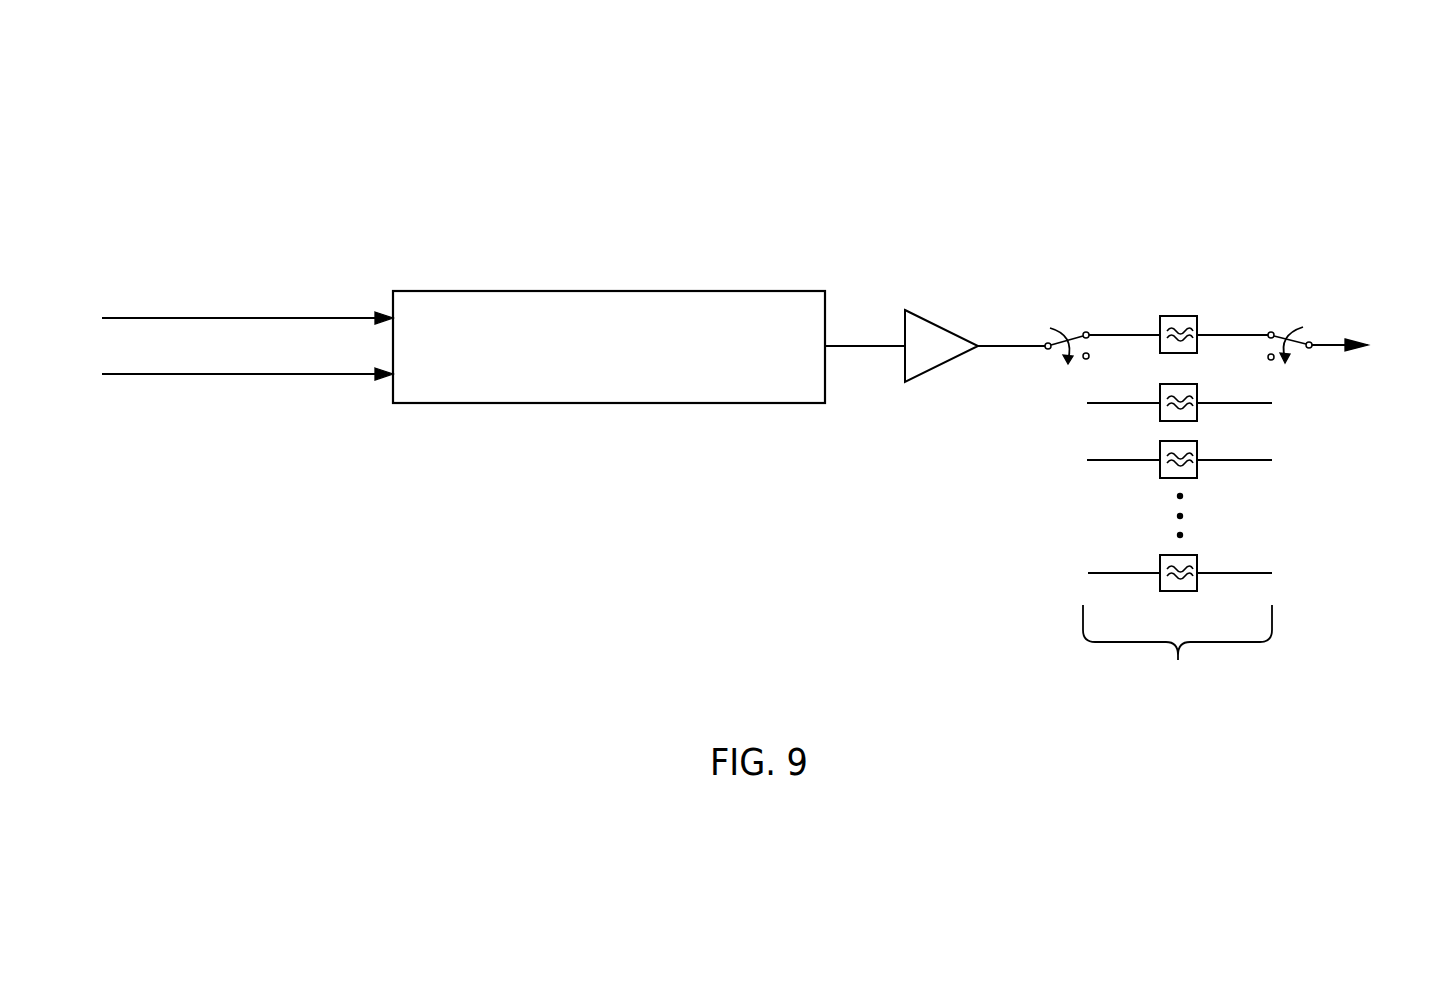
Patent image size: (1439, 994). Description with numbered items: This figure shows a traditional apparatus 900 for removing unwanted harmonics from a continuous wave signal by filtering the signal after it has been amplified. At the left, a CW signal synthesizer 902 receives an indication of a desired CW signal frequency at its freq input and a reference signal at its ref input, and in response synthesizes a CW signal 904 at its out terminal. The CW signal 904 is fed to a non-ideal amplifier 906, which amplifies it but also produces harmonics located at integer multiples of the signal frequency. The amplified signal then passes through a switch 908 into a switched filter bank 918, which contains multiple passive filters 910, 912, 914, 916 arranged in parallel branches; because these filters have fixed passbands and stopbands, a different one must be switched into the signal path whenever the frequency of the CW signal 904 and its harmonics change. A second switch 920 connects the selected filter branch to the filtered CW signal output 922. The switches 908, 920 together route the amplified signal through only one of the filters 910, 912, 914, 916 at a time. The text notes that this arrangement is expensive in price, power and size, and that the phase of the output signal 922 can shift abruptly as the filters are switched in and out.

The apparatus 900 is at (596, 195).
The CW signal synthesizer 902 is at (587, 405).
The CW signal 904 is at (863, 346).
The non-ideal amplifier 906 is at (938, 363).
The switch 908 is at (1058, 318).
The filter 910 is at (1185, 316).
The filter 912 is at (1185, 384).
The filter 914 is at (1185, 478).
The filter 916 is at (1185, 591).
The switched filter bank 918 is at (1178, 671).
The switch 920 is at (1305, 368).
The filtered CW signal output 922 is at (1368, 286).